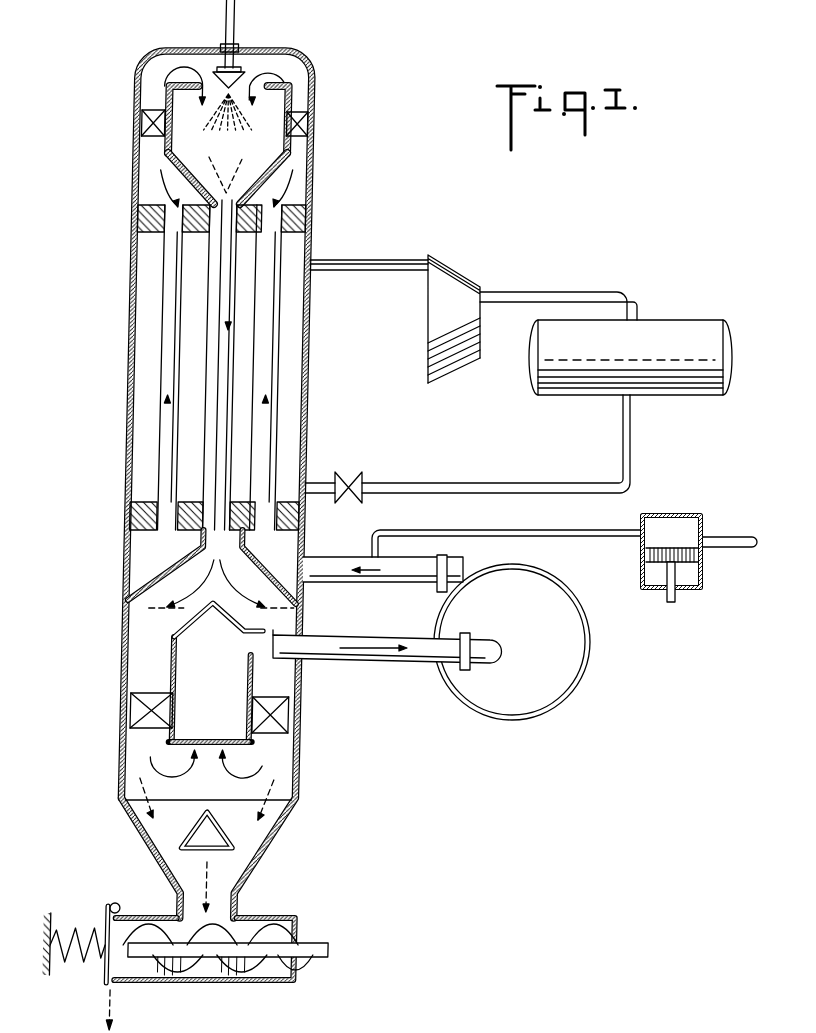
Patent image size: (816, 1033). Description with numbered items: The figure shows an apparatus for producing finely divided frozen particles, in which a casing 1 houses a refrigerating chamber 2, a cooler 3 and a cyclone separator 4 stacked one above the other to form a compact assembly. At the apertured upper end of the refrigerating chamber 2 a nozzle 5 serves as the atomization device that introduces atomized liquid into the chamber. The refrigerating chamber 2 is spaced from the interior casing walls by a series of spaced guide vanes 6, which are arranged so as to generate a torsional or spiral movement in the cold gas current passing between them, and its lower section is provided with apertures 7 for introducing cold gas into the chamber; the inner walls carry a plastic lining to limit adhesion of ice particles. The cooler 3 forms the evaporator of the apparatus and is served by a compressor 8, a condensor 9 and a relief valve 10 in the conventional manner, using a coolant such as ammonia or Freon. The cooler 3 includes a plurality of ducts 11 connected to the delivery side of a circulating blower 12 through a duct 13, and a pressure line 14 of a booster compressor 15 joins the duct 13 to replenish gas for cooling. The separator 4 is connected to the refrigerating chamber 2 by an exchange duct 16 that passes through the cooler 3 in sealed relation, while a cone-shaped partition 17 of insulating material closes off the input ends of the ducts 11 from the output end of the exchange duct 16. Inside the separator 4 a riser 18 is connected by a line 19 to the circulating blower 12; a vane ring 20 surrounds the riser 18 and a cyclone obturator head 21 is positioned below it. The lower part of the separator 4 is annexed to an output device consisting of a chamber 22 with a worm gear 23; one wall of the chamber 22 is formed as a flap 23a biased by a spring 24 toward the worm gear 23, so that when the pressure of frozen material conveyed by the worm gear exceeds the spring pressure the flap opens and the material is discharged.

The casing 1 is at (124, 633).
The refrigerating chamber 2 is at (175, 148).
The cooler 3 is at (288, 312).
The cyclone separator 4 is at (252, 745).
The nozzle 5 is at (222, 68).
The guide vanes 6 is at (308, 128).
The apertures 7 is at (190, 178).
The compressor 8 is at (453, 293).
The condensor 9 is at (663, 330).
The relief valve 10 is at (343, 476).
The ducts 11 is at (168, 258).
The circulating blower 12 is at (545, 690).
The duct 13 is at (338, 562).
The pressure line 14 is at (572, 538).
The booster compressor 15 is at (686, 586).
The exchange duct 16 is at (212, 303).
The cone-shaped partition 17 is at (136, 570).
The riser 18 is at (232, 685).
The line 19 is at (420, 650).
The vane ring 20 is at (140, 712).
The cyclone obturator head 21 is at (236, 840).
The chamber 22 is at (272, 985).
The worm gear 23 is at (192, 965).
The flap 23a is at (106, 976).
The spring 24 is at (92, 928).